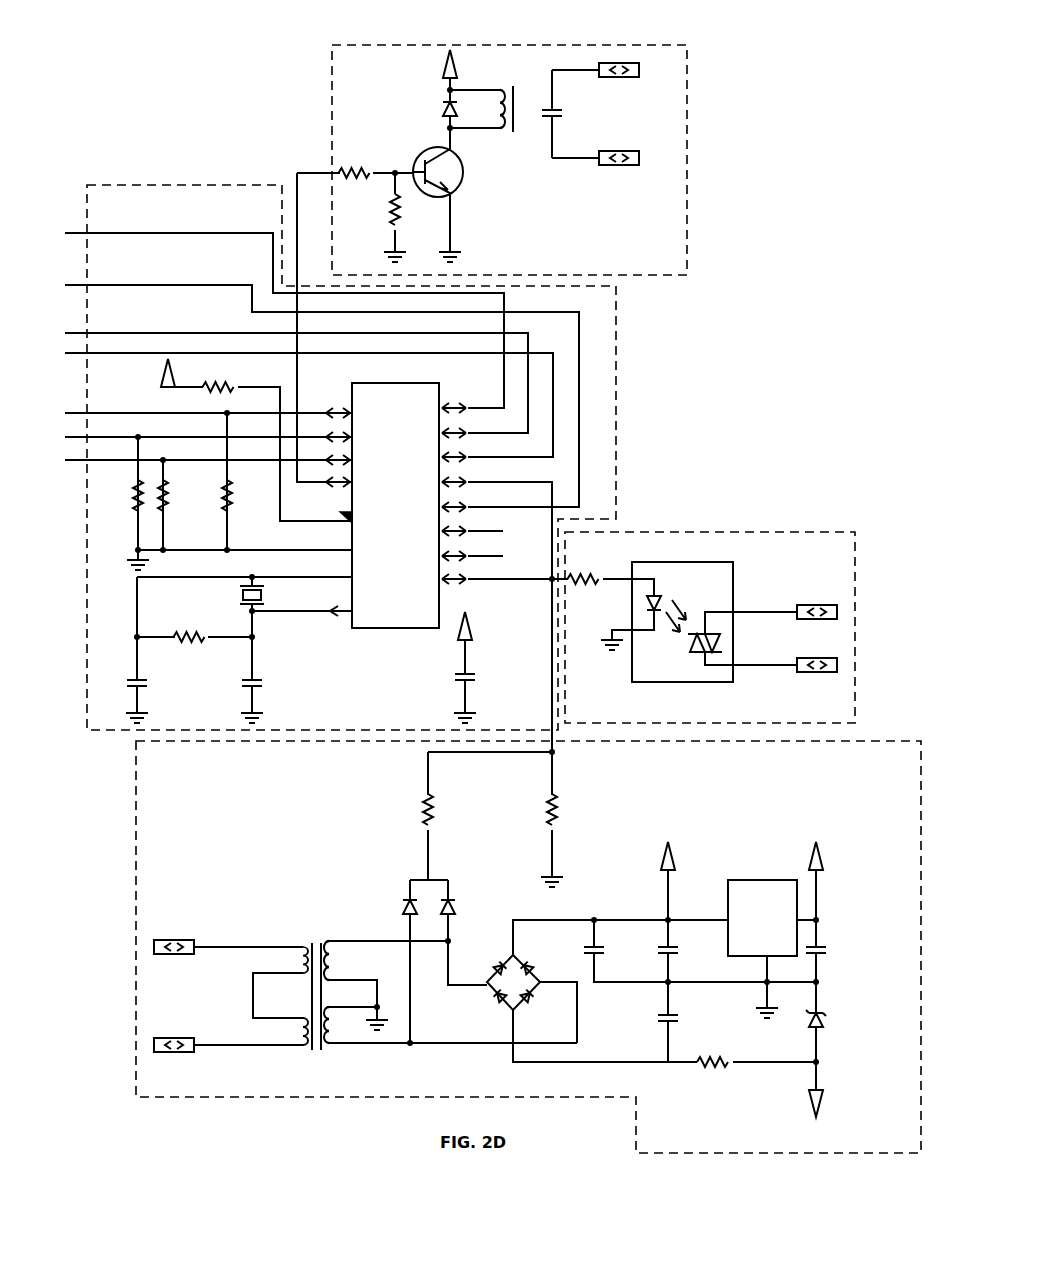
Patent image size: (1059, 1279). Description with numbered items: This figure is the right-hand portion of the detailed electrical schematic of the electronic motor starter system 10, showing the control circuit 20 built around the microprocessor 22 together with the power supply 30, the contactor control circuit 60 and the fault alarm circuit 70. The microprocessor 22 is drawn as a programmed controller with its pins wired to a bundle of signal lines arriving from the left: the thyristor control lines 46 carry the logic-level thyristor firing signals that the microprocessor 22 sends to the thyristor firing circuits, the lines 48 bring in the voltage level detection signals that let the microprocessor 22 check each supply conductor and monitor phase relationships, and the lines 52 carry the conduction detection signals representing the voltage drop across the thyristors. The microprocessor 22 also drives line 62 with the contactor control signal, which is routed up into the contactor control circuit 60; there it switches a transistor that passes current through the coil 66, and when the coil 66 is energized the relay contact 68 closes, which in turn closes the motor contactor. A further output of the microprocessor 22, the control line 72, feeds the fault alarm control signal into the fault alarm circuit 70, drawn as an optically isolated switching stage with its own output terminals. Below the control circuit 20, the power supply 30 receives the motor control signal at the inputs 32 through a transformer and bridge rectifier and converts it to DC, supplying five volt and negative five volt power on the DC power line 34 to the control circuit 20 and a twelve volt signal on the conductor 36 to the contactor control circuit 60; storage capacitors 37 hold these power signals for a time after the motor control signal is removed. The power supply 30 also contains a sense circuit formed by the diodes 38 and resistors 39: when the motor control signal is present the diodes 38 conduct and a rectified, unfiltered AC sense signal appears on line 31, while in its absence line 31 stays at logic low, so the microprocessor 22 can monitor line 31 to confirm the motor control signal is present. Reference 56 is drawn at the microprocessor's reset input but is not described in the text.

The electronic motor starter system 10 is at (720, 310).
The control circuit 20 is at (374, 457).
The microprocessor 22 is at (487, 627).
The power supply 30 is at (528, 923).
The sense signal line 31 is at (524, 596).
The inputs 32 is at (365, 990).
The DC power line 34 is at (502, 627).
The conductor 36 is at (548, 472).
The capacitors 37 is at (700, 927).
The diodes 38 is at (426, 962).
The resistors 39 is at (493, 818).
The thyristor control lines 46 is at (208, 462).
The lines 48 is at (309, 324).
The lines 52 is at (322, 374).
The reset line 56 is at (266, 535).
The contactor control circuit 60 is at (492, 139).
The line 62 is at (322, 309).
The coil 66 is at (482, 129).
The relay contact 68 is at (590, 114).
The fault alarm circuit 70 is at (710, 607).
The control line 72 is at (518, 555).